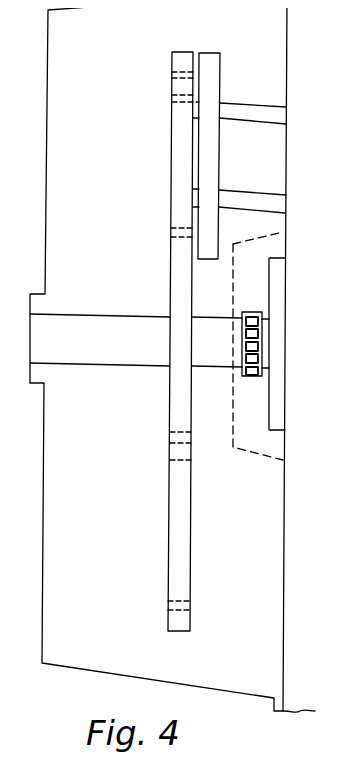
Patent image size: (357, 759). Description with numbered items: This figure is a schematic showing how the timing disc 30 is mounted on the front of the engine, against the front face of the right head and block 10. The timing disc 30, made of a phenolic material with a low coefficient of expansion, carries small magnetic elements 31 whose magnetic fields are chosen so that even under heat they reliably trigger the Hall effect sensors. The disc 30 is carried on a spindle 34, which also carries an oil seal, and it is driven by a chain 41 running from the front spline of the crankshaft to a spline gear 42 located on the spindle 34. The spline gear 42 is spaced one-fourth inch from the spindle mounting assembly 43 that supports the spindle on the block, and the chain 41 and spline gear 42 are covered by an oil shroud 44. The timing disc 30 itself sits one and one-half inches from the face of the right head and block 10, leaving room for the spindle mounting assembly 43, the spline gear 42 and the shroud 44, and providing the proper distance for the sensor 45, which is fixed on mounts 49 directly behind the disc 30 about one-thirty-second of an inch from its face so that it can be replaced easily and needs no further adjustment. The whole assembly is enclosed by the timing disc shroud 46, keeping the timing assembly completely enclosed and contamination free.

The right head and block 10 is at (309, 368).
The timing disc 30 is at (175, 523).
The elements 31 is at (180, 95).
The spindle 34 is at (39, 353).
The chain 41 is at (254, 378).
The spline gear 42 is at (258, 333).
The spindle mounting assembly 43 is at (279, 270).
The shroud 44 is at (263, 450).
The sensor 45 is at (220, 65).
The timing disc shroud 46 is at (97, 673).
The mounts 49 is at (263, 110).